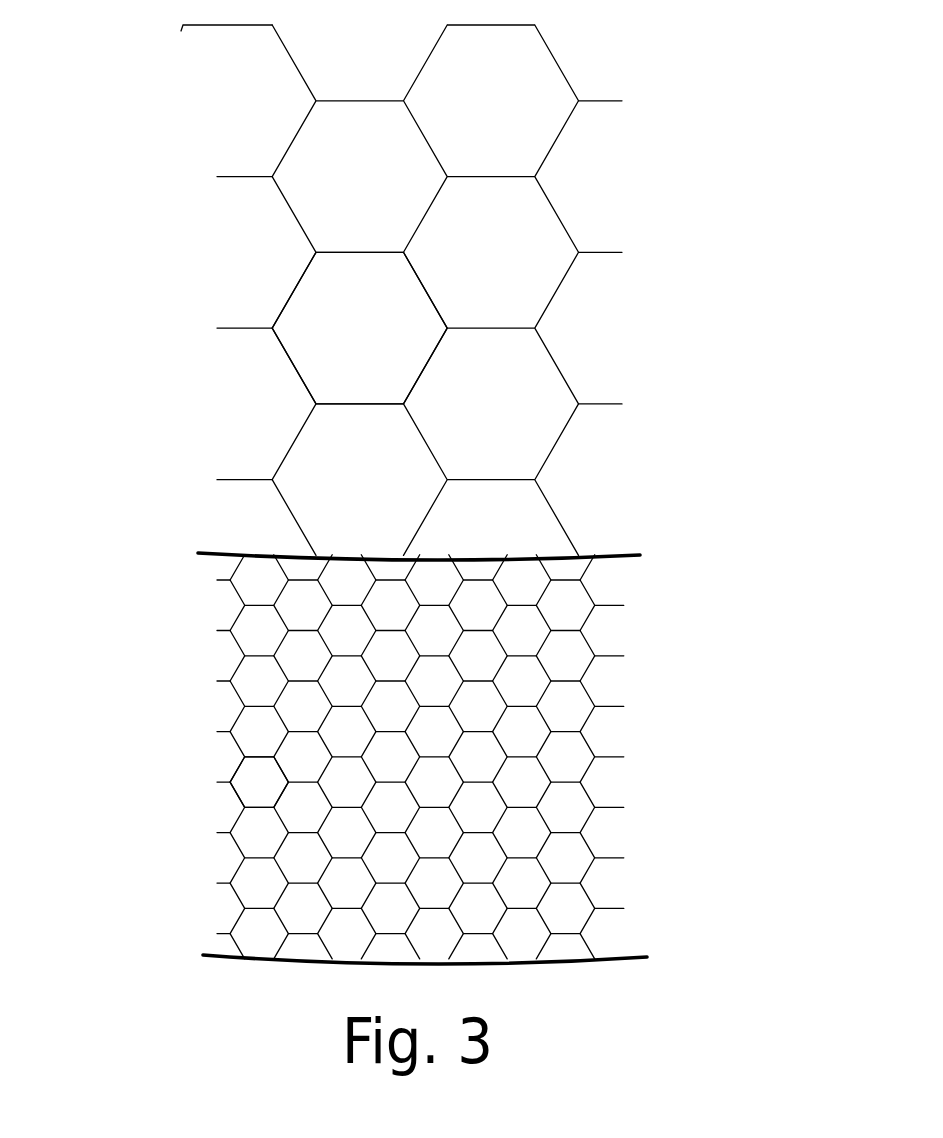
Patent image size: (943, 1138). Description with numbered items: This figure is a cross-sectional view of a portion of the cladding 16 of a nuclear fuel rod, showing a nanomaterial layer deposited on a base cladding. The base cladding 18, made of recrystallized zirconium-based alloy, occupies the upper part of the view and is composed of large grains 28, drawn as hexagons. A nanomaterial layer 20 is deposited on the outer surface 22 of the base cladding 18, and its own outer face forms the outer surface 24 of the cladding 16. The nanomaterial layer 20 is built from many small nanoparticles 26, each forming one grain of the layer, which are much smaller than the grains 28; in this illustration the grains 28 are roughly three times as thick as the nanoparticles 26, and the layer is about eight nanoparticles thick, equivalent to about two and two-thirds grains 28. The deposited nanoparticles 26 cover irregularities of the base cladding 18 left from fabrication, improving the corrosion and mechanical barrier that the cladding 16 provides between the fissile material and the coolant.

The cladding 16 is at (414, 549).
The base cladding 18 is at (602, 304).
The nanomaterial layer 20 is at (612, 780).
The outer surface of base cladding 22 is at (483, 560).
The outer surface of cladding 24 is at (260, 963).
The nanoparticles 26 is at (260, 835).
The grains of base cladding 28 is at (367, 433).